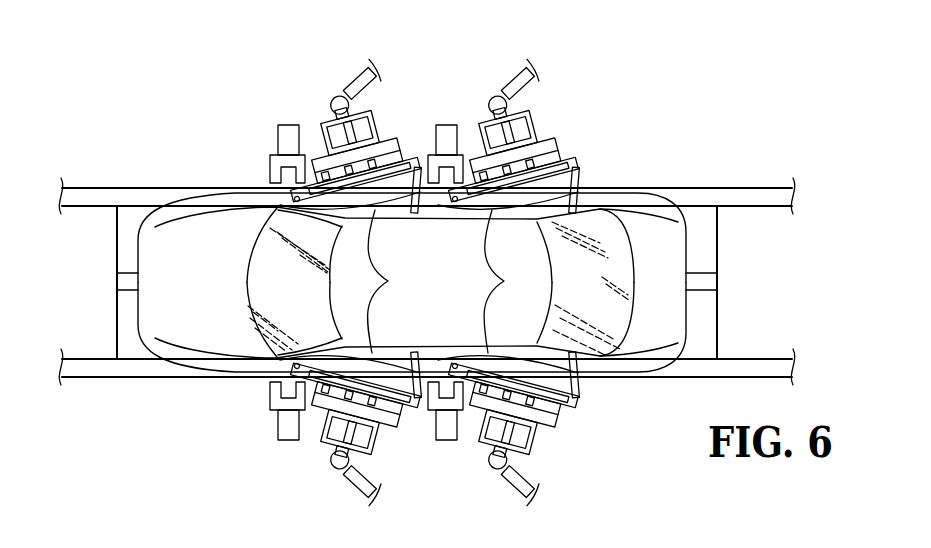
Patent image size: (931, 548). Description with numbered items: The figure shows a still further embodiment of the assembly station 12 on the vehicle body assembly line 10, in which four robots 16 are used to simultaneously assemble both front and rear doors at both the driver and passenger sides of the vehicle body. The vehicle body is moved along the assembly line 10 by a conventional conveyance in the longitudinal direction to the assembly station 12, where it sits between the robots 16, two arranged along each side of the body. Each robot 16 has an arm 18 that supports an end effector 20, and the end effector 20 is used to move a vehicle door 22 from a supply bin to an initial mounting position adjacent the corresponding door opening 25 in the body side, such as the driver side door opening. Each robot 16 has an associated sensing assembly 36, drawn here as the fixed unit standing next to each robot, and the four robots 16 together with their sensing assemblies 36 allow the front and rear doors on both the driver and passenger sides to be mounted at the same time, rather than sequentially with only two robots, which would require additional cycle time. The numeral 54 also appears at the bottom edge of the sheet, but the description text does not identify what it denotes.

The vehicle body assembly line 10 is at (419, 287).
The assembly station 12 is at (680, 165).
The robot 16 is at (348, 68).
The arm 18 is at (350, 77).
The end effector 20 is at (324, 123).
The vehicle door 22 is at (567, 162).
The door opening 25 is at (450, 281).
The sensing assembly 36 is at (258, 168).
The controller 54 is at (169, 543).